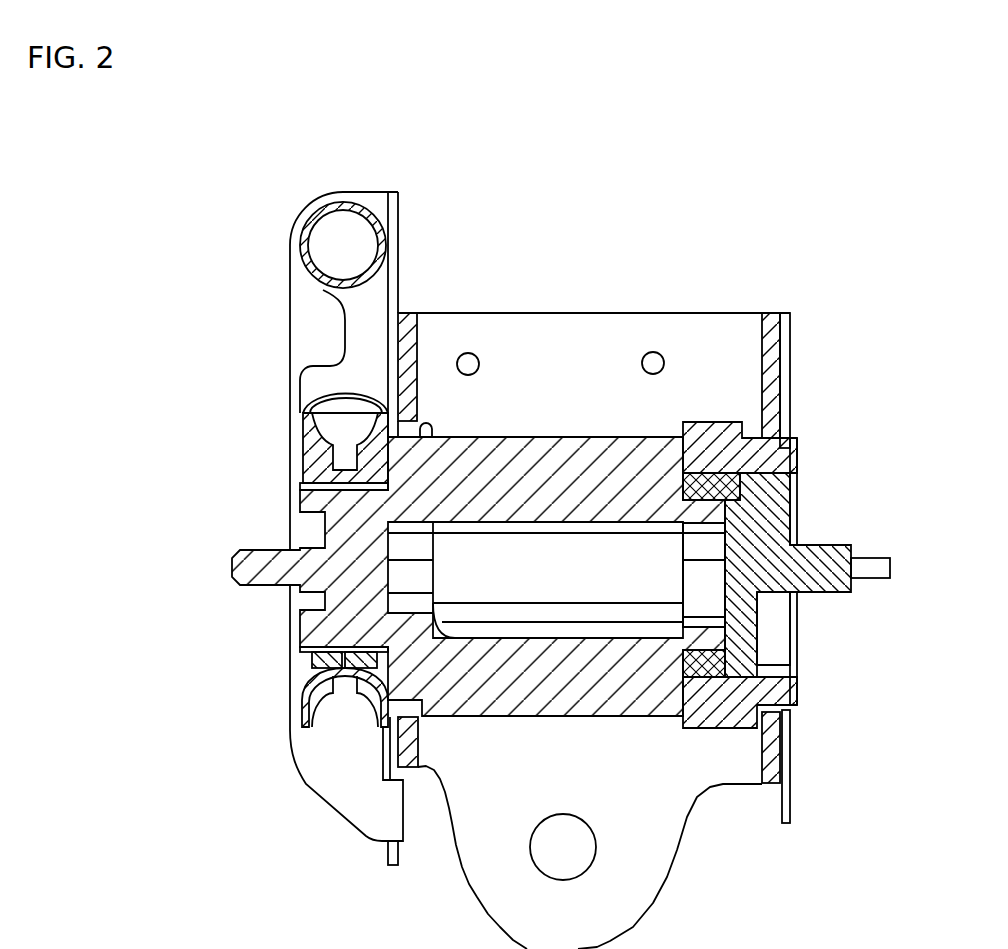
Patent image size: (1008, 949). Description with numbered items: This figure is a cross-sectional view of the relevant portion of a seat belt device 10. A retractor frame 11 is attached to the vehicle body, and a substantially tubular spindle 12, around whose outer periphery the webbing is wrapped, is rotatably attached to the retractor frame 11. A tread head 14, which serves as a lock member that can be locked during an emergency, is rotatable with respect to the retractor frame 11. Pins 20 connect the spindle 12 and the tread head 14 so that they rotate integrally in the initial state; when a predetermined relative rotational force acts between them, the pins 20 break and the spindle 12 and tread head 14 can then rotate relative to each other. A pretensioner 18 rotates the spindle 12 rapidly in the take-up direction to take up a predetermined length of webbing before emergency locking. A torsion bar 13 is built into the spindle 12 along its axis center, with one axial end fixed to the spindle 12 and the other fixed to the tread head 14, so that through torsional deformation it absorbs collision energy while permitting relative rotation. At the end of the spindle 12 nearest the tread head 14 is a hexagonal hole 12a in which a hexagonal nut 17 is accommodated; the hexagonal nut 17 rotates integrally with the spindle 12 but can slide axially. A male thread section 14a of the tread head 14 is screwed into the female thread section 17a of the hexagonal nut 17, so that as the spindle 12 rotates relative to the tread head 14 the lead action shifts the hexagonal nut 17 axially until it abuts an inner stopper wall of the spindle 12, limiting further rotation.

The seat belt device 10 is at (678, 196).
The retractor frame 11 is at (722, 312).
The spindle 12 is at (626, 452).
The hexagonal hole 12a is at (743, 657).
The torsion bar 13 is at (545, 585).
The tread head 14 is at (773, 523).
The male thread section 14a is at (740, 502).
The hexagonal nut 17 is at (707, 657).
The female thread section 17a is at (708, 627).
The pretensioner 18 is at (268, 682).
The pins 20 is at (775, 462).